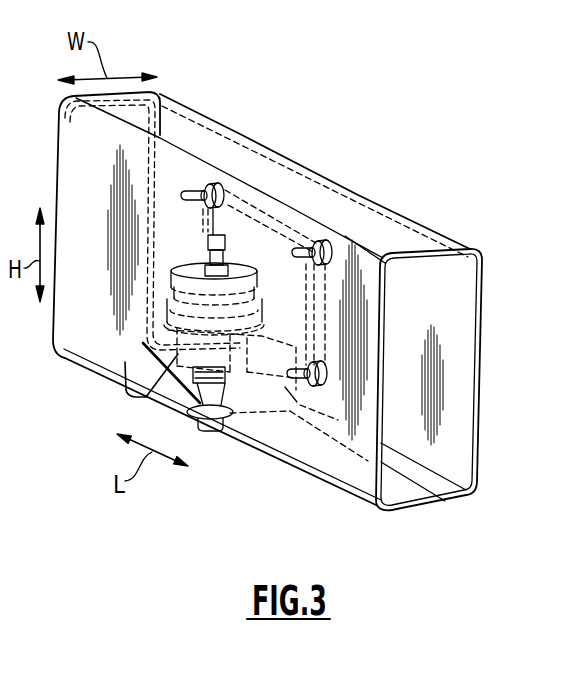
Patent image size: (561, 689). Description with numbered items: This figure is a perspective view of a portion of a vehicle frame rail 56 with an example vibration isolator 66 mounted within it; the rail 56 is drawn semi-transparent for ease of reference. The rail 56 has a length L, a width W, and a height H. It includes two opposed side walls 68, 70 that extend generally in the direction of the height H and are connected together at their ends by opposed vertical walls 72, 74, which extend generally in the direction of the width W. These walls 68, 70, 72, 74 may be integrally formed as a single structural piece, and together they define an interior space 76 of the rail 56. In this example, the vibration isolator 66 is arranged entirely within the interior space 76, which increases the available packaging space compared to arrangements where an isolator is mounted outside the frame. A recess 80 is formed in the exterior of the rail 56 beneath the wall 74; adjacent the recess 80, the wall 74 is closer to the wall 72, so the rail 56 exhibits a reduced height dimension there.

The rail 56 is at (282, 173).
The vibration isolator 66 is at (150, 255).
The side wall 68 is at (347, 462).
The side wall 70 is at (478, 410).
The vertical wall 72 is at (345, 208).
The vertical wall 74 is at (422, 511).
The interior space 76 is at (424, 359).
The recess 80 is at (150, 407).